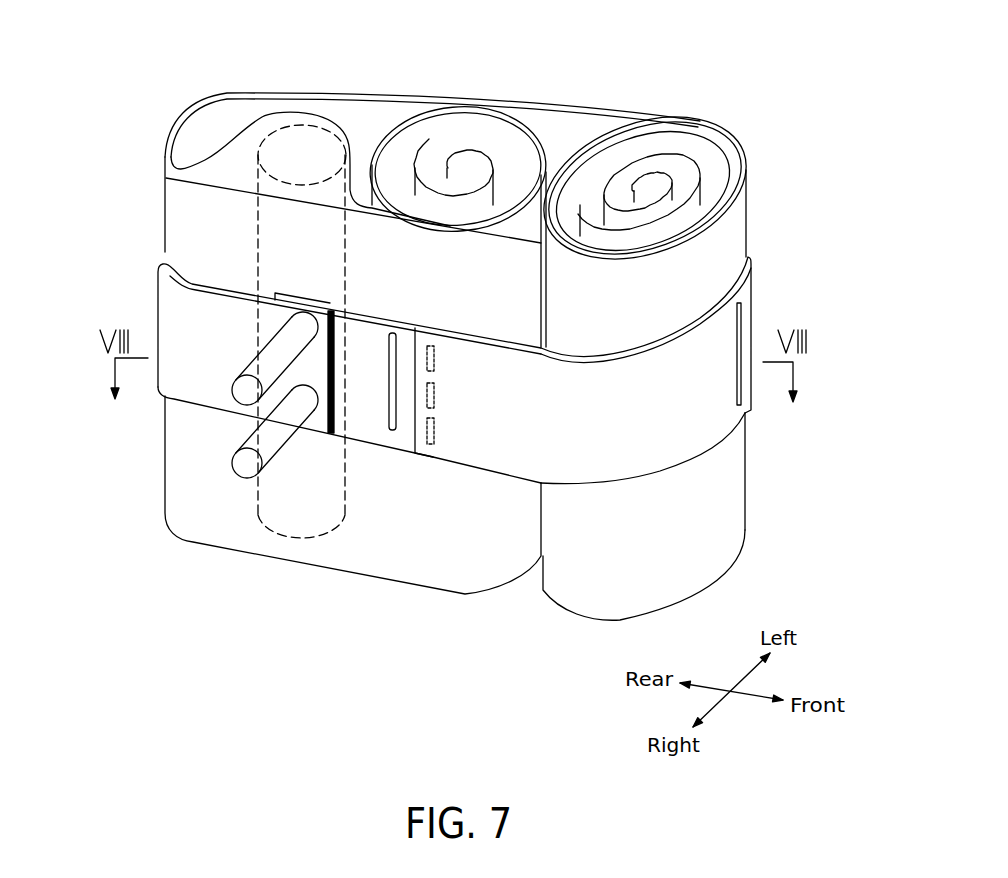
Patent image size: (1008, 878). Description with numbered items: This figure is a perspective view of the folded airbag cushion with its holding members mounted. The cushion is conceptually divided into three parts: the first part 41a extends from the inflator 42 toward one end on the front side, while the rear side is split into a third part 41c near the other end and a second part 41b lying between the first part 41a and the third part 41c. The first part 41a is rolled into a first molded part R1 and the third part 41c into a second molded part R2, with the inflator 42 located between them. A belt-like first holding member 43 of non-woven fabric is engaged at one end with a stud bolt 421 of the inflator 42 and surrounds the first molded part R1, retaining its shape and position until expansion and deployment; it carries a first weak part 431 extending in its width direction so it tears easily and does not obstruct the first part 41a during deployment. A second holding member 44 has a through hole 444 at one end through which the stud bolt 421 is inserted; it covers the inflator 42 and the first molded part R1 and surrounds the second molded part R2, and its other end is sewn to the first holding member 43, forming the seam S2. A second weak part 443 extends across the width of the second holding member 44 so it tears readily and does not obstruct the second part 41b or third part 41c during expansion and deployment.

The first part 41a is at (420, 555).
The second part 41b is at (360, 108).
The third part 41c is at (733, 237).
The first molded part R1 is at (523, 117).
The second molded part R2 is at (618, 125).
The inflator 42 is at (268, 533).
The stud bolt 421 is at (242, 468).
The through hole 444 is at (305, 388).
The second holding member 44 is at (683, 440).
The second weak part 443 is at (742, 320).
The first holding member 43 is at (365, 427).
The first weak part 431 is at (383, 437).
The seam S2 is at (433, 433).